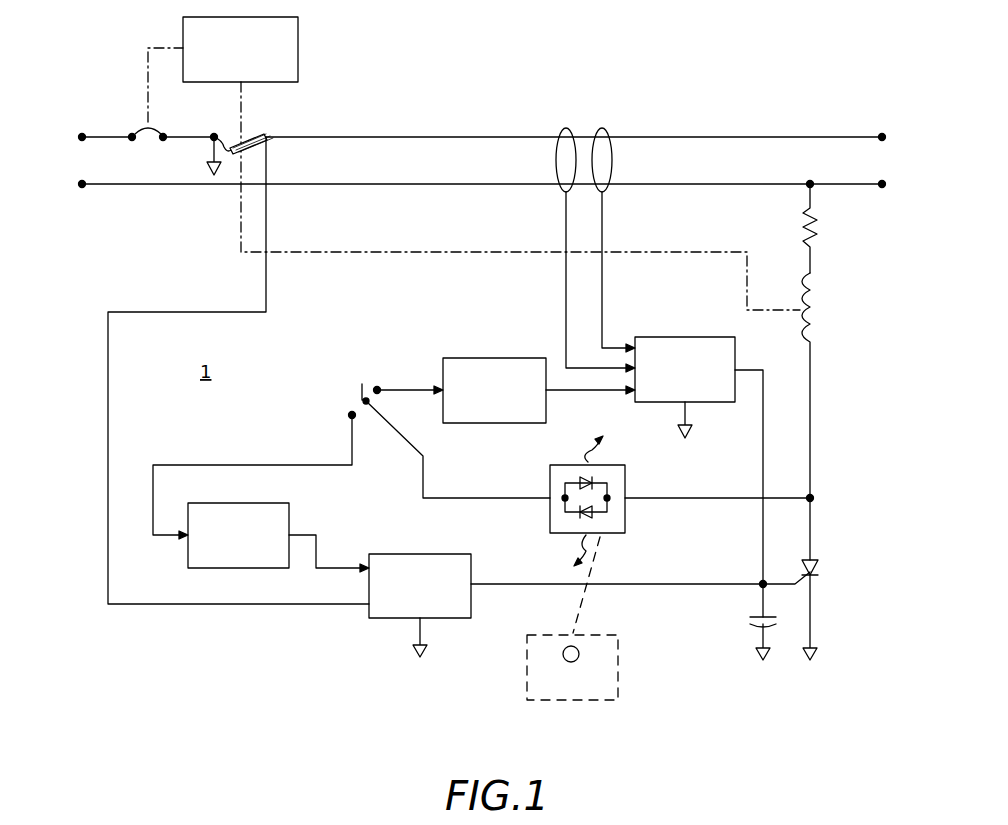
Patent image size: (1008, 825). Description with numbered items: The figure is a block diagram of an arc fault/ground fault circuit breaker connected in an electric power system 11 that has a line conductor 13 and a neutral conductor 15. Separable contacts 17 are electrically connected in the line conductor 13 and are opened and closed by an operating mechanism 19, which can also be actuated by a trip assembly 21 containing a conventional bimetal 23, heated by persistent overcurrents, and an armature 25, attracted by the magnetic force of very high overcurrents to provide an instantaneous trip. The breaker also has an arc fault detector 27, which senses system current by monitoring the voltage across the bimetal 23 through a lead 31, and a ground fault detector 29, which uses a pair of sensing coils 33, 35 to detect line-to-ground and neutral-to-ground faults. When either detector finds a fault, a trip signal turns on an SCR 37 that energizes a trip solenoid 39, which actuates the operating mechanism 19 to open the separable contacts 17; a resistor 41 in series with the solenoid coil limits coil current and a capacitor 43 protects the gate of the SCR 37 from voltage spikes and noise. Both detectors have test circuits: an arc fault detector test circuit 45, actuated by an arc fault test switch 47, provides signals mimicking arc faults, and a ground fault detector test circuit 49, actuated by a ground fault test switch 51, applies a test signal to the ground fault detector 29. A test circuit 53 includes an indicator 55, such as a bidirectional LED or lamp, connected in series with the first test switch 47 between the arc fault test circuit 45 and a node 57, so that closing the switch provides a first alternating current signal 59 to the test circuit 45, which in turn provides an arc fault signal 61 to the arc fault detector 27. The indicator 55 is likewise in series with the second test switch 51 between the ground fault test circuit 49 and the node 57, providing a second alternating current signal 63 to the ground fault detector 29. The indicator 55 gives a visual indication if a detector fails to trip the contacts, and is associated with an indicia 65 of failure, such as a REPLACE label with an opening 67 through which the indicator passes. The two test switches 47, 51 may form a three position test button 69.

The electric power system 11 is at (384, 125).
The line conductor 13 is at (104, 140).
The neutral conductor 15 is at (104, 187).
The separable contacts 17 is at (146, 125).
The operating mechanism 19 is at (298, 28).
The trip assembly 21 is at (198, 230).
The bimetal 23 is at (262, 143).
The armature 25 is at (241, 134).
The arc fault detector 27 is at (380, 620).
The ground fault detector 29 is at (672, 337).
The lead 31 is at (107, 382).
The sensing coil 33 is at (562, 128).
The sensing coil 35 is at (606, 128).
The silicon controlled rectifier 37 is at (818, 566).
The trip solenoid 39 is at (814, 320).
The resistor 41 is at (818, 228).
The capacitor 43 is at (748, 622).
The arc fault detector test circuit 45 is at (289, 512).
The arc fault test switch 47 is at (348, 404).
The ground fault detector test circuit 49 is at (492, 357).
The ground fault test switch 51 is at (364, 383).
The test circuit 53 is at (390, 460).
The indicator 55 is at (626, 522).
The node 57 is at (812, 498).
The first alternating current signal 59 is at (199, 464).
The arc fault signal 61 is at (318, 548).
The second alternating current signal 63 is at (412, 388).
The indicia 65 is at (582, 702).
The opening 67 is at (579, 654).
The three position test button 69 is at (334, 376).